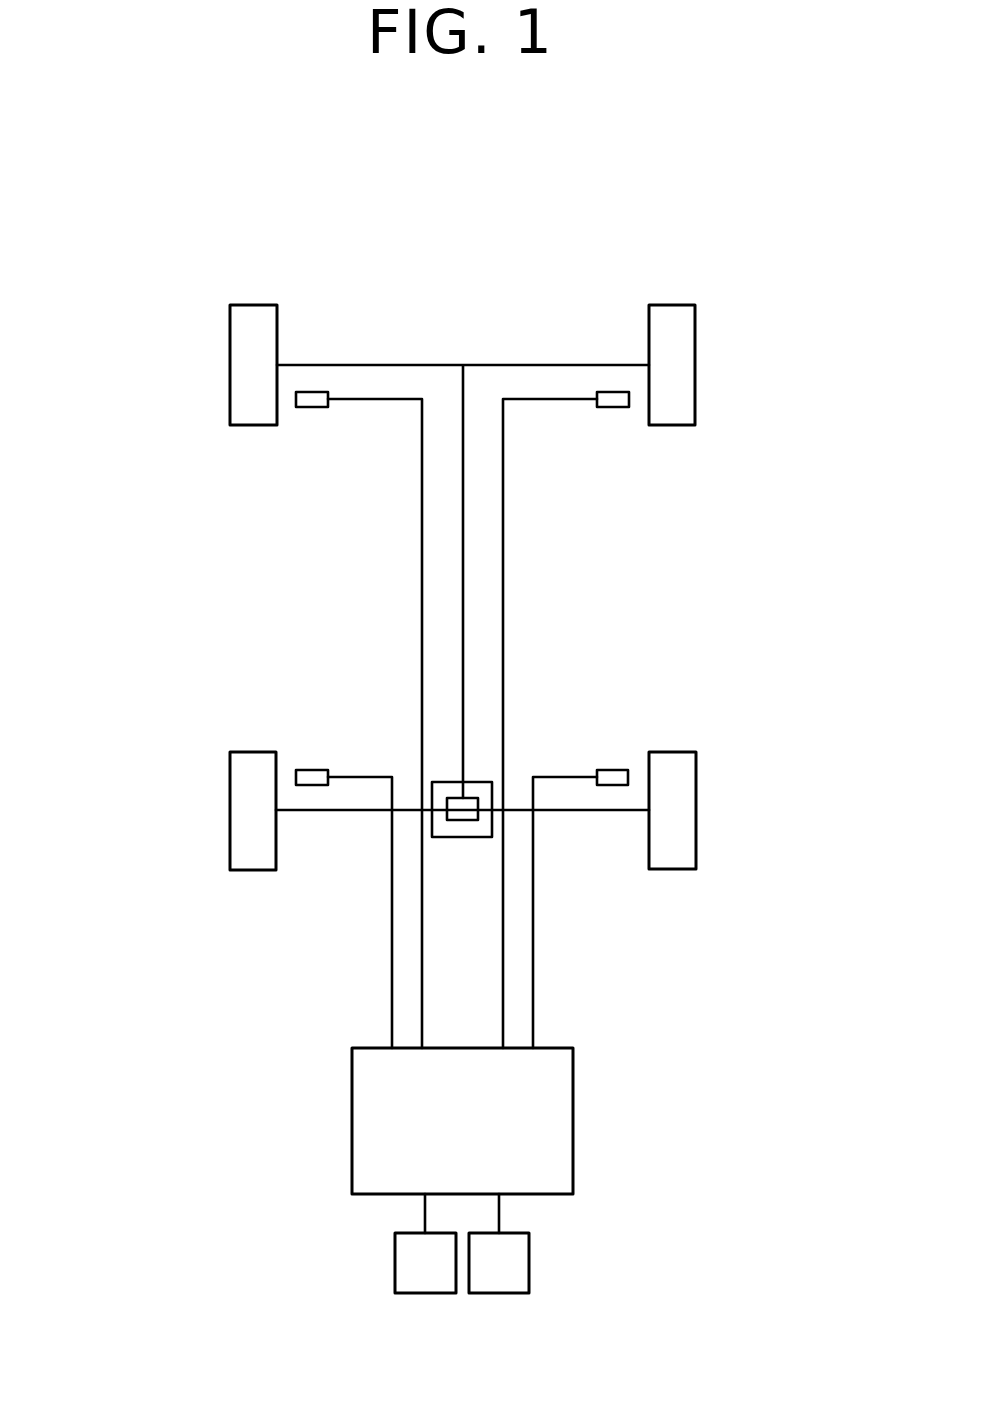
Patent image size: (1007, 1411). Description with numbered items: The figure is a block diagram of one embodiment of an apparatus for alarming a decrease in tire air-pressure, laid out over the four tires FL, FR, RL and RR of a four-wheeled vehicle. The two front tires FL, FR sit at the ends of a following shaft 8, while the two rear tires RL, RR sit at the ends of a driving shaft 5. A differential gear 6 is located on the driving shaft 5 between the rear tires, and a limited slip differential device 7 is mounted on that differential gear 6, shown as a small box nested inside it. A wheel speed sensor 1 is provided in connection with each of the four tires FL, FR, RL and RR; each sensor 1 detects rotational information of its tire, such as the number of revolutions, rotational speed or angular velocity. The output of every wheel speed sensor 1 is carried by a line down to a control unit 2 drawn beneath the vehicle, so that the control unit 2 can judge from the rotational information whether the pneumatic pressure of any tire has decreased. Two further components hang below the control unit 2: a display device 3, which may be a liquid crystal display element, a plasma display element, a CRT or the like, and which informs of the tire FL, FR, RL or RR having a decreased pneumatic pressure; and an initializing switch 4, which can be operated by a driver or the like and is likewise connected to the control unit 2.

The wheel speed sensor 1 is at (312, 777).
The control unit 2 is at (538, 1136).
The display device 3 is at (512, 1263).
The initializing switch 4 is at (412, 1263).
The driving shaft 5 is at (348, 812).
The differential gear 6 is at (447, 843).
The limited slip differential device 7 is at (462, 812).
The following shaft 8 is at (400, 365).
The front left tire FL is at (245, 357).
The front right tire FR is at (680, 357).
The rear left tire RL is at (245, 803).
The rear right tire RR is at (680, 802).